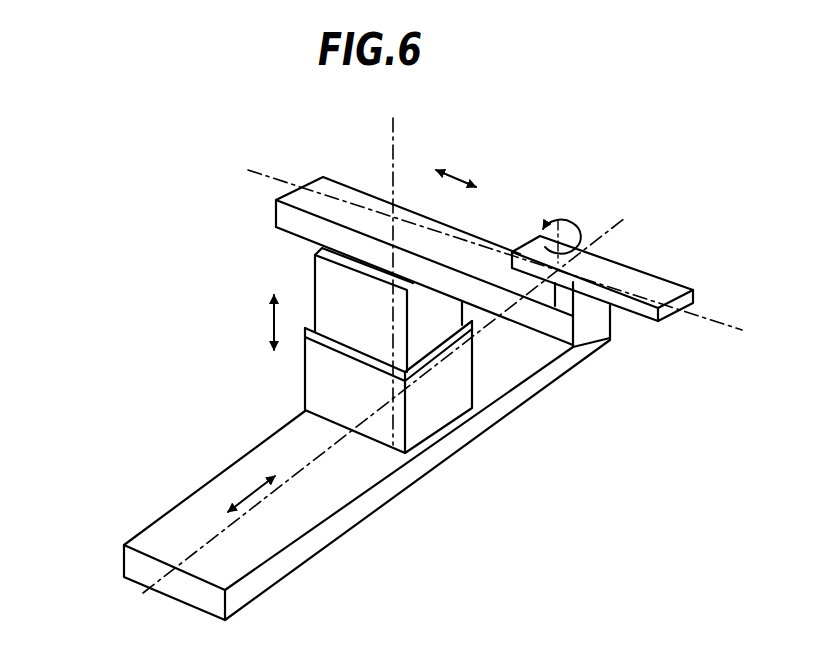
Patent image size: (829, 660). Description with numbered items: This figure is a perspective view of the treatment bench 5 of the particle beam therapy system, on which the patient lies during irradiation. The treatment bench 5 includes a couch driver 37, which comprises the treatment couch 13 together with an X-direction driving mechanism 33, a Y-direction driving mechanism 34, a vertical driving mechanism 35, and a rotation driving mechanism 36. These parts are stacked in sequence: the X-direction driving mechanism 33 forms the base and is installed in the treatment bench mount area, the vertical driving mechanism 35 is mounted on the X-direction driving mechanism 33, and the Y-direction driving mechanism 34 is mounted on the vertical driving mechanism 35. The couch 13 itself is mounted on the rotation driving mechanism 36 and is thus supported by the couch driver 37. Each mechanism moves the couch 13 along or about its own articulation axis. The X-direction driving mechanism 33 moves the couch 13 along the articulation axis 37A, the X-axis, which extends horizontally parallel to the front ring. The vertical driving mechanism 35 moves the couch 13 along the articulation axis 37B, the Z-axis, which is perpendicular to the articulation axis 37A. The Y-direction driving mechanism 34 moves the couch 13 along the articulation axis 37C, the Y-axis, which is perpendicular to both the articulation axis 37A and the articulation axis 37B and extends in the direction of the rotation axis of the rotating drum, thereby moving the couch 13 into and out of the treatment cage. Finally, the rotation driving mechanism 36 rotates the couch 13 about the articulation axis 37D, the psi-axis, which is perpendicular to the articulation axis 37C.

The treatment bench 5 is at (250, 247).
The treatment couch 13 is at (682, 288).
The X-direction driving mechanism 33 is at (372, 505).
The Y-direction driving mechanism 34 is at (336, 185).
The vertical driving mechanism 35 is at (427, 427).
The rotation driving mechanism 36 is at (565, 300).
The couch driver 37 is at (515, 442).
The articulation axis (X-axis) 37A is at (187, 560).
The articulation axis (Z-axis) 37B is at (393, 118).
The articulation axis (Y-axis) 37C is at (245, 168).
The articulation axis (psi-axis) 37D is at (558, 220).